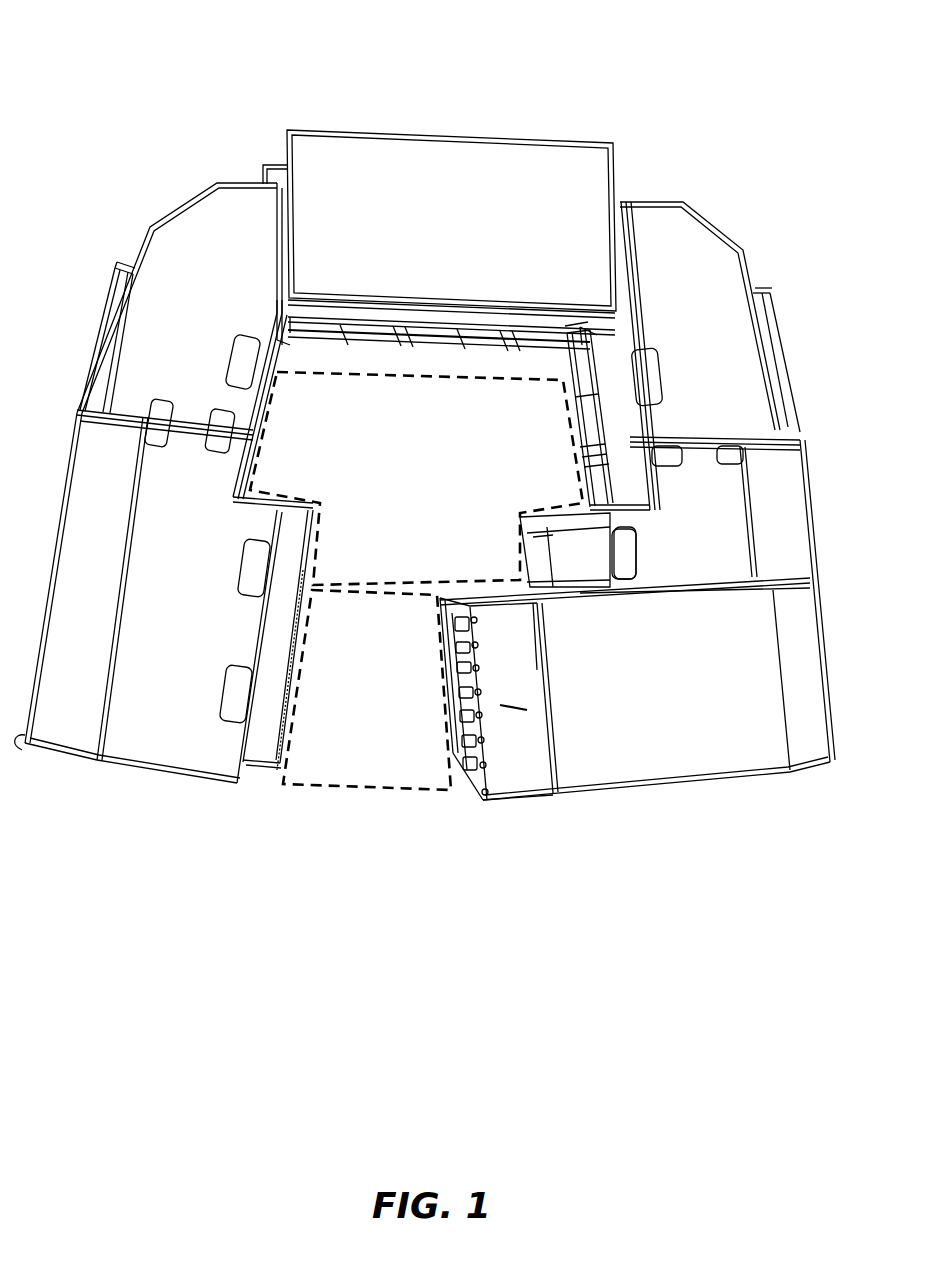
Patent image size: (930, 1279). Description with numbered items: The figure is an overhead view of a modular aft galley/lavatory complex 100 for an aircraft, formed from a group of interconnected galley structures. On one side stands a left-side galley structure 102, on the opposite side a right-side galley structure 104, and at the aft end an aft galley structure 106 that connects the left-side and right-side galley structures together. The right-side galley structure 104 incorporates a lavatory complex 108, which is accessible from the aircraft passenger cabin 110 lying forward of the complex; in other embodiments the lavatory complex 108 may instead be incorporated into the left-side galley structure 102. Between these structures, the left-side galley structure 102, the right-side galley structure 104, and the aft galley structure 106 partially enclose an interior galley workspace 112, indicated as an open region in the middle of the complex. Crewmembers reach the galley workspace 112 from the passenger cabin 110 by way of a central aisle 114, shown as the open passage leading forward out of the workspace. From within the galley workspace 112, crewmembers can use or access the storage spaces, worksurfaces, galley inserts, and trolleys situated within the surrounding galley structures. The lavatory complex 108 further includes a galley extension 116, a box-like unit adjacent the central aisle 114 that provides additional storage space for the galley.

The modular aft galley/lavatory complex 100 is at (84, 61).
The left-side galley structure 102 is at (88, 449).
The right-side galley structure 104 is at (742, 284).
The aft galley structure 106 is at (456, 156).
The lavatory complex 108 is at (708, 770).
The aircraft passenger cabin 110 is at (520, 938).
The interior galley workspace 112 is at (449, 466).
The central aisle 114 is at (386, 708).
The galley extension 116 is at (526, 794).